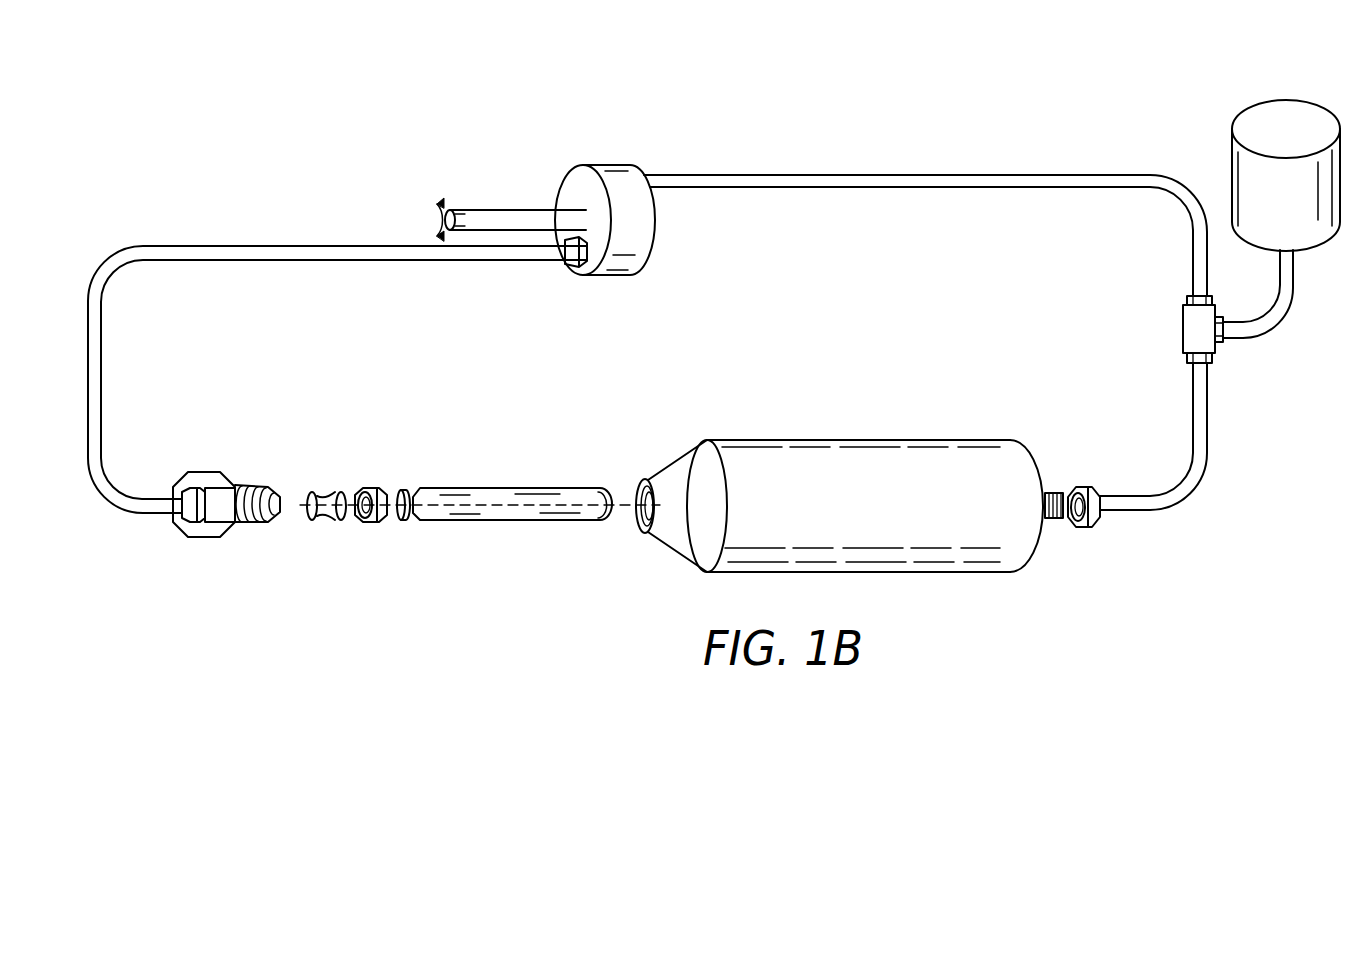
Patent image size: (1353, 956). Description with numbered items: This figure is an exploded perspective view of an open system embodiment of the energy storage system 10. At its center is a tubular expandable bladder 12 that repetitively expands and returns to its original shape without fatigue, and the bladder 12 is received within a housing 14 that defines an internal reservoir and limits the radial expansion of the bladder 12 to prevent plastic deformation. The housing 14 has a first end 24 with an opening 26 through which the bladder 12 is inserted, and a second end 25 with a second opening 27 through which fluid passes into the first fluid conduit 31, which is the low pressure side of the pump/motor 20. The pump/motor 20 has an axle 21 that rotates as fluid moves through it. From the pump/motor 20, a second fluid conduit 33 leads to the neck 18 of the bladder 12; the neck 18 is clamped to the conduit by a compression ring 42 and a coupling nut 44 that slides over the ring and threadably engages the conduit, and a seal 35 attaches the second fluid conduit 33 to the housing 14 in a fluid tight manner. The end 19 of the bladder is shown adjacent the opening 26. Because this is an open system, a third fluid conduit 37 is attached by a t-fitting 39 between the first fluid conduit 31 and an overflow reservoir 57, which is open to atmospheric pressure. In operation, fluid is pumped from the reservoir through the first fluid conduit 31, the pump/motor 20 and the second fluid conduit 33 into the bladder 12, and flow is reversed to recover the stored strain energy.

The system 10 is at (1020, 148).
The bladder 12 is at (495, 507).
The housing 14 is at (844, 450).
The neck 18 is at (399, 516).
The tube end 19 is at (596, 501).
The pump/motor 20 is at (575, 185).
The axle 21 is at (516, 214).
The first end 24 is at (641, 531).
The second end 25 is at (1032, 560).
The opening 26 is at (640, 508).
The second opening 27 is at (1056, 519).
The first fluid conduit 31 is at (1202, 444).
The second fluid conduit 33 is at (247, 250).
The seal 35 is at (215, 528).
The third fluid conduit 37 is at (1280, 301).
The t-fitting 39 is at (1183, 326).
The compression ring 42 is at (331, 492).
The coupling nut 44 is at (1188, 299).
The overflow reservoir 57 is at (1233, 152).